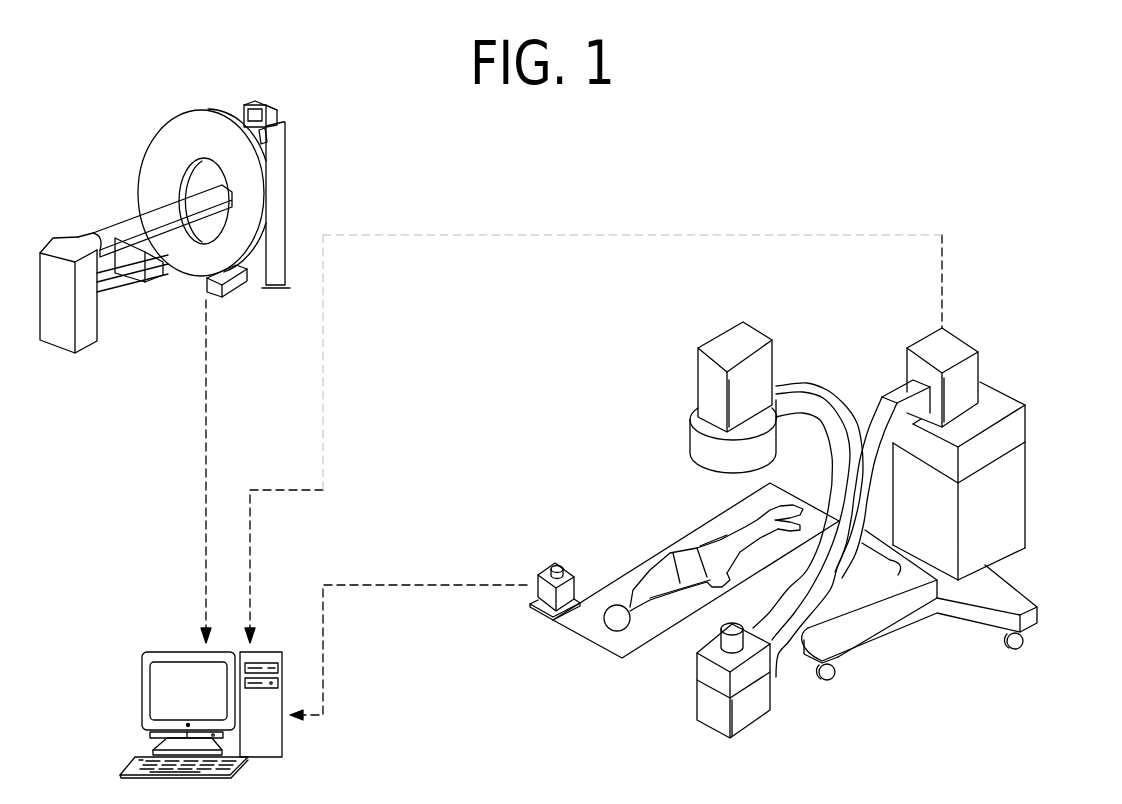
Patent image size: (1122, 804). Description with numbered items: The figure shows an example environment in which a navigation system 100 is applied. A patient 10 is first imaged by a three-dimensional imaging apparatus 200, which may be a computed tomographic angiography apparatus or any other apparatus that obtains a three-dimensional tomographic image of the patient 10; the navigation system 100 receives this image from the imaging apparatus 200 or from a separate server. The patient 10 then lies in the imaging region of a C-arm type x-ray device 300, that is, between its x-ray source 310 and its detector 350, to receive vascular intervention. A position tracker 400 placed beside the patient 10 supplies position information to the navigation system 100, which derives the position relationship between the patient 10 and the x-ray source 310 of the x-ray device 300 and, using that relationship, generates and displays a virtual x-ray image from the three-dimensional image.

The patient 10 is at (653, 577).
The navigation system 100 is at (142, 687).
The 3D imaging apparatus 200 is at (285, 183).
The C-arm type x-ray device 300 is at (1025, 492).
The x-ray source 310 is at (755, 723).
The detector 350 is at (690, 441).
The position tracker 400 is at (568, 565).